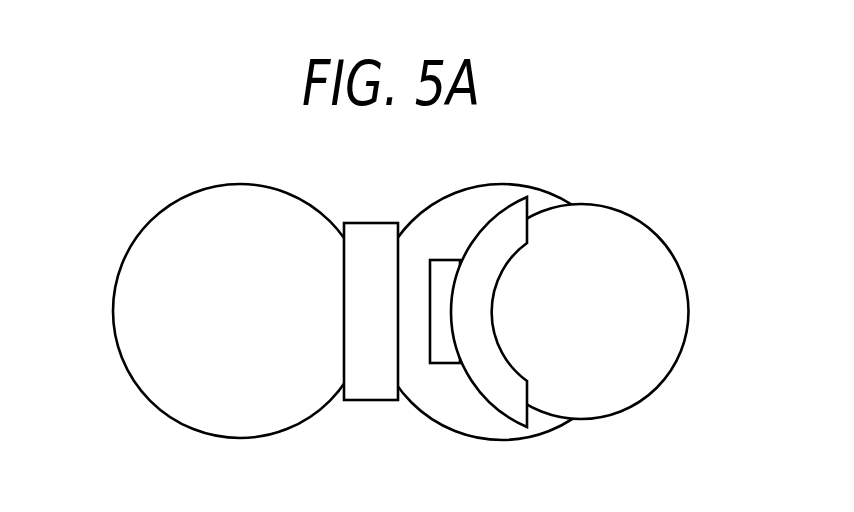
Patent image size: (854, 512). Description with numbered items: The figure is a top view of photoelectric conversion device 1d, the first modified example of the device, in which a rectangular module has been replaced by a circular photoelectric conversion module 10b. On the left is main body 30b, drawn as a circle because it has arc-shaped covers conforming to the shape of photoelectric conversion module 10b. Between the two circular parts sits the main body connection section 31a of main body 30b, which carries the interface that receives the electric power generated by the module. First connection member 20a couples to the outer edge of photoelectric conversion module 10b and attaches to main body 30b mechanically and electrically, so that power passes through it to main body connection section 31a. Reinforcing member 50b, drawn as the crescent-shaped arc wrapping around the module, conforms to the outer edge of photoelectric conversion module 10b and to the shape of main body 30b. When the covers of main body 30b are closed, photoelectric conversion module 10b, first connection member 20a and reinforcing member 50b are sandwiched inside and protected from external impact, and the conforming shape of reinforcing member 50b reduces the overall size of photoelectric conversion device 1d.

The photoelectric conversion device 1d is at (165, 187).
The main body 30b is at (137, 322).
The main body connection section 31a is at (398, 308).
The first connection member 20a is at (443, 353).
The photoelectric conversion module 10b is at (667, 318).
The reinforcing member 50b is at (498, 402).